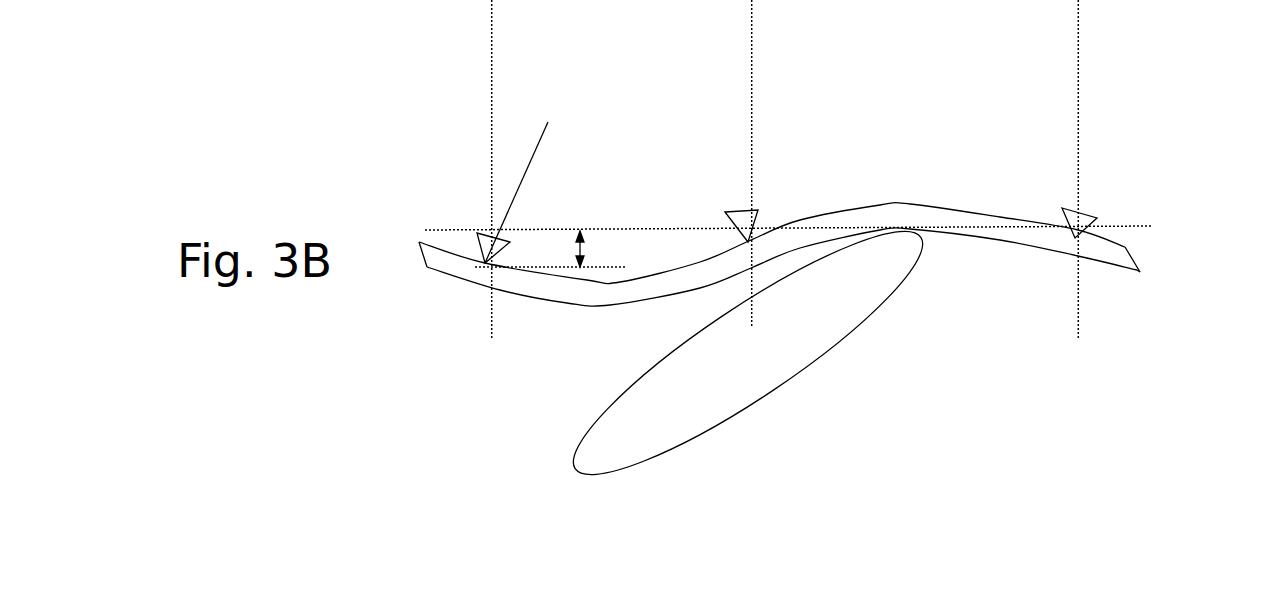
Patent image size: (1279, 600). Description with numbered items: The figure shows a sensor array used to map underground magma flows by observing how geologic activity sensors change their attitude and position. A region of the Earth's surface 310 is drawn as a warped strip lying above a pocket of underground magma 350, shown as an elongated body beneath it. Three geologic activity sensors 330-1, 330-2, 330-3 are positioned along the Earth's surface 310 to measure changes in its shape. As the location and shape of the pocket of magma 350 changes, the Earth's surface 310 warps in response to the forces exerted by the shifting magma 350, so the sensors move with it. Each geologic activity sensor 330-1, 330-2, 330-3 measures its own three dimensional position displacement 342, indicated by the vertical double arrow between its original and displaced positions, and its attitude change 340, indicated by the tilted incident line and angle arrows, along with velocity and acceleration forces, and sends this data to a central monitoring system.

The Earth's surface 310 is at (1133, 258).
The geologic activity sensor 330-1 is at (476, 233).
The geologic activity sensor 330-2 is at (760, 208).
The geologic activity sensor 330-3 is at (1095, 212).
The attitude change 340 is at (488, 117).
The three dimensional position displacement 342 is at (585, 248).
The pocket of underground magma 350 is at (905, 283).